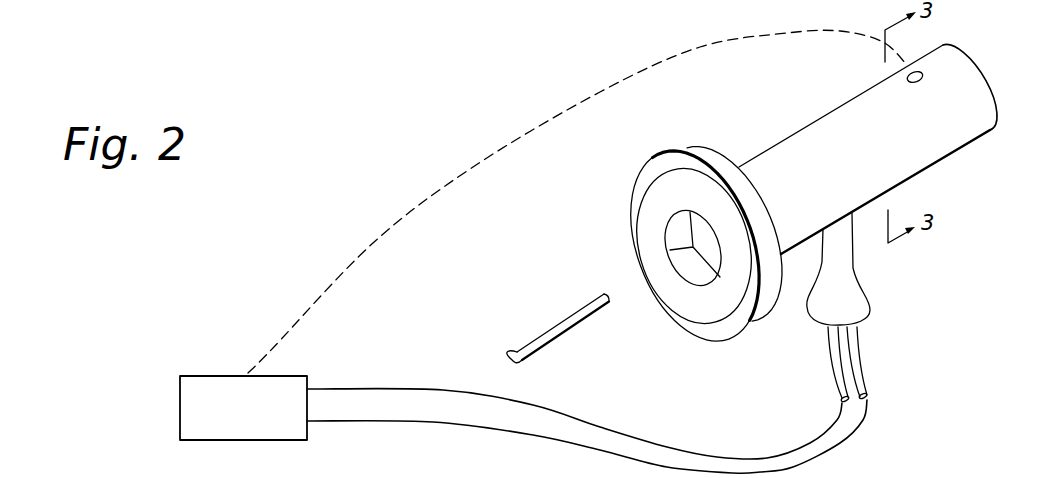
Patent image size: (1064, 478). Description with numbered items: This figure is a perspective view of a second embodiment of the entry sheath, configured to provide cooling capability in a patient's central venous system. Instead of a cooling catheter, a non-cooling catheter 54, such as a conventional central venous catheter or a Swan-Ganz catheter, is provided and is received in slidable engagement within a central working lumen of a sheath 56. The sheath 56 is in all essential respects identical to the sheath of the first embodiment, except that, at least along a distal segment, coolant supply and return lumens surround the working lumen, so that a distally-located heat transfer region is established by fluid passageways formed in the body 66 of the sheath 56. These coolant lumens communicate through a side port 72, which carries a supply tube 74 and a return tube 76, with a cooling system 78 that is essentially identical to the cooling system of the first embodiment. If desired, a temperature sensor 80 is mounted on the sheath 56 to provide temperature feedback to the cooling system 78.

The non-cooling catheter 54 is at (553, 325).
The sheath 56 is at (826, 201).
The body 66 is at (851, 171).
The side port 72 is at (870, 306).
The supply tube 74 is at (832, 370).
The return tube 76 is at (860, 358).
The cooling system 78 is at (180, 409).
The temperature sensor 80 is at (915, 83).